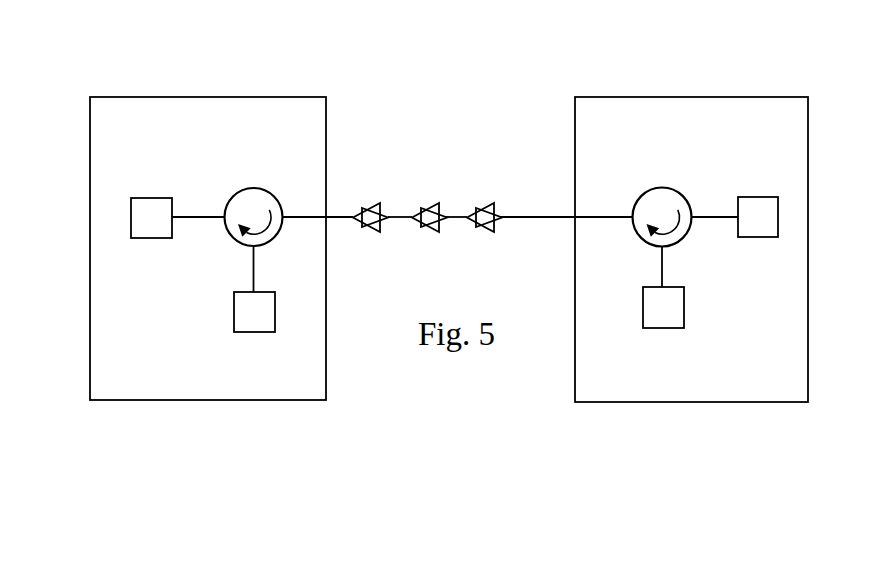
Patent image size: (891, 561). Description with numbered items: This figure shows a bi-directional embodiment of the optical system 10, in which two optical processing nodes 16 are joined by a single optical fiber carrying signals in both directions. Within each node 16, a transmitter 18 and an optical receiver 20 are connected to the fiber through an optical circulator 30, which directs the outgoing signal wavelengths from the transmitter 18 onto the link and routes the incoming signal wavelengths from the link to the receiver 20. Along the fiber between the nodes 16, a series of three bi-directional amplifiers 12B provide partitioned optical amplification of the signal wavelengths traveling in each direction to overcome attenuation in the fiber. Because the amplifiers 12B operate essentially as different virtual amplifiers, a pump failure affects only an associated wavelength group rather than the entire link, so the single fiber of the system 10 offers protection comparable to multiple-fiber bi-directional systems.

The optical system 10 is at (790, 407).
The bi-directional amplifier 12B is at (373, 200).
The optical processing node 16 is at (298, 97).
The transmitter 18 is at (151, 198).
The optical receiver 20 is at (263, 332).
The optical circulator 30 is at (255, 188).